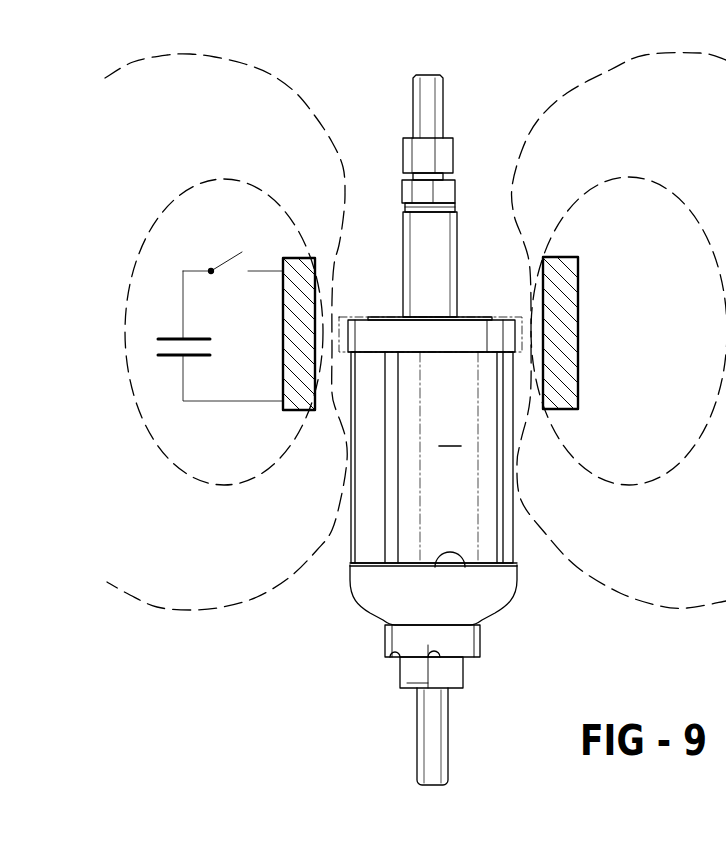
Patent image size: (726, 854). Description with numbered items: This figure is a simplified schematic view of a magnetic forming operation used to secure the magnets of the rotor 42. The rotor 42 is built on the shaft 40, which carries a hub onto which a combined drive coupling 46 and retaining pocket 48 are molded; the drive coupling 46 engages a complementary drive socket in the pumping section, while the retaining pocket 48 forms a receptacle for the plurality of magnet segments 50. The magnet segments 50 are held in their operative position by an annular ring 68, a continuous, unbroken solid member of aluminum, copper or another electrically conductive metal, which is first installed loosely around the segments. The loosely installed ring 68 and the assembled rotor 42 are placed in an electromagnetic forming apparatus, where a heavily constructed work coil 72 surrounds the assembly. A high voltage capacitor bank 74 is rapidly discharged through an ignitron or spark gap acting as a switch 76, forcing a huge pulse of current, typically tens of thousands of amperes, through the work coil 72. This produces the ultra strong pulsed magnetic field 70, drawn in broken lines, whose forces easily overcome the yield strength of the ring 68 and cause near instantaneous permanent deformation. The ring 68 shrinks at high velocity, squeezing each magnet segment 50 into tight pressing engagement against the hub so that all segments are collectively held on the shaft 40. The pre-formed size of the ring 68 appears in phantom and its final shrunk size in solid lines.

The shaft 40 is at (448, 100).
The annular ring 68 is at (356, 314).
The magnet segments 50 is at (351, 443).
The rotor 42 is at (351, 561).
The retaining pocket 48 is at (465, 570).
The drive coupling 46 is at (410, 668).
The work coil 72 is at (580, 330).
The capacitor bank 74 is at (188, 338).
The switch 76 is at (228, 262).
The magnetic field 70 is at (210, 60).